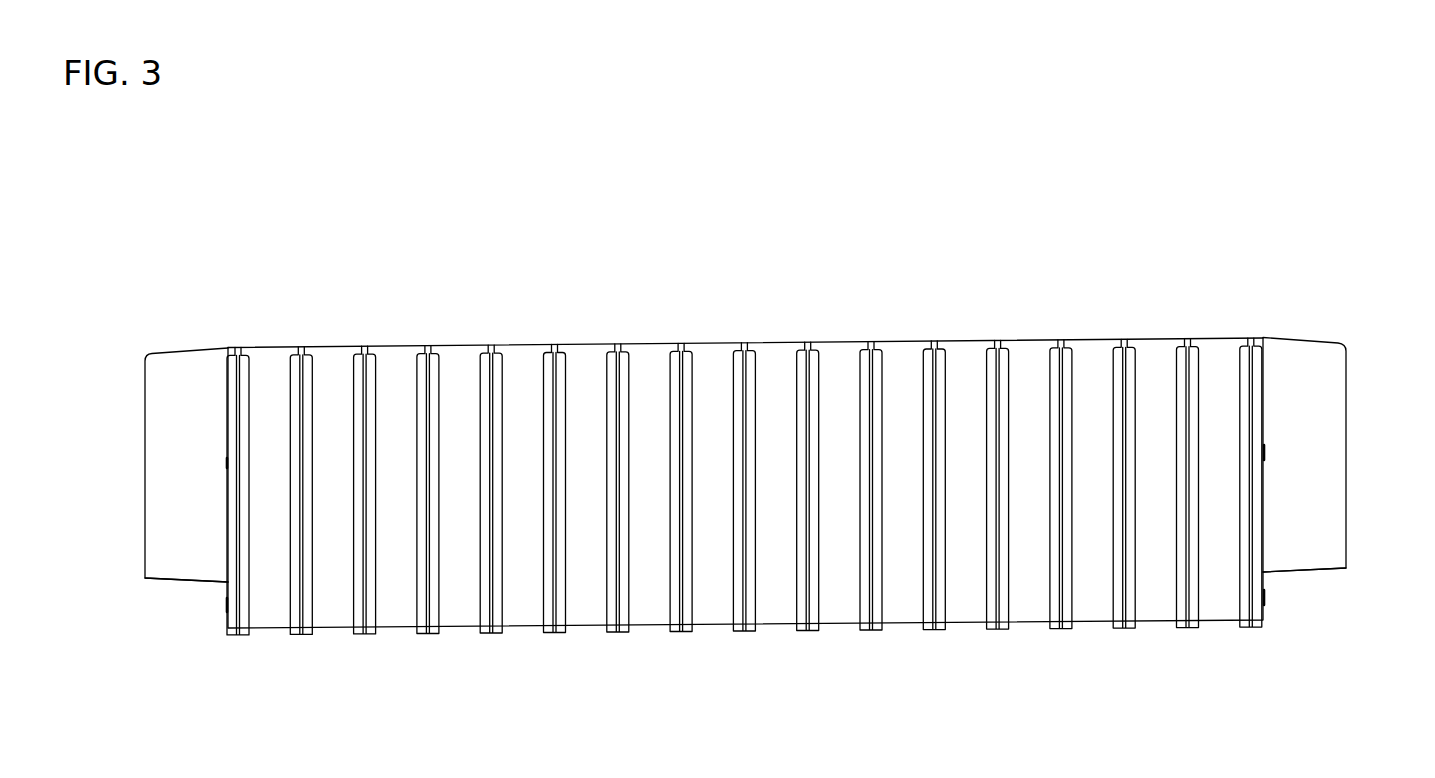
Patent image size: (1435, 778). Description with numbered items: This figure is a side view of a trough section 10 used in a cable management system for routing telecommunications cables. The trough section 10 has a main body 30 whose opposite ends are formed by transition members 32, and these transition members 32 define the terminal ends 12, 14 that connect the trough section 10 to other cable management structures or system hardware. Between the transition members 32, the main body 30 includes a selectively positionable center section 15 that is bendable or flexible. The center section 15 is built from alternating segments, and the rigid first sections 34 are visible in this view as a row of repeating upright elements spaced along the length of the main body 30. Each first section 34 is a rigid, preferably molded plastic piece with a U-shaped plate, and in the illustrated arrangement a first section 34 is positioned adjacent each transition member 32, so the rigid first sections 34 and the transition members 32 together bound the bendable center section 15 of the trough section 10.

The trough section 10 is at (600, 298).
The terminal end 12 is at (145, 430).
The terminal end 14 is at (1345, 438).
The center section 15 is at (708, 343).
The main body 30 is at (1005, 341).
The transition member 32 is at (180, 567).
The first section 34 is at (366, 346).